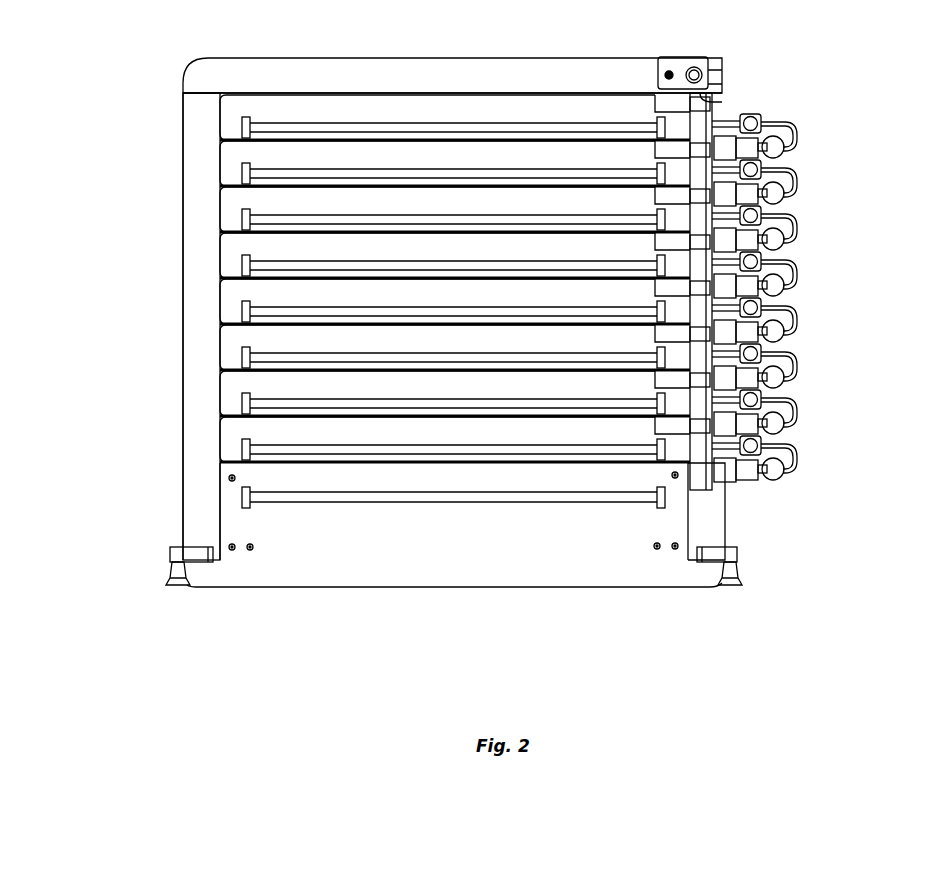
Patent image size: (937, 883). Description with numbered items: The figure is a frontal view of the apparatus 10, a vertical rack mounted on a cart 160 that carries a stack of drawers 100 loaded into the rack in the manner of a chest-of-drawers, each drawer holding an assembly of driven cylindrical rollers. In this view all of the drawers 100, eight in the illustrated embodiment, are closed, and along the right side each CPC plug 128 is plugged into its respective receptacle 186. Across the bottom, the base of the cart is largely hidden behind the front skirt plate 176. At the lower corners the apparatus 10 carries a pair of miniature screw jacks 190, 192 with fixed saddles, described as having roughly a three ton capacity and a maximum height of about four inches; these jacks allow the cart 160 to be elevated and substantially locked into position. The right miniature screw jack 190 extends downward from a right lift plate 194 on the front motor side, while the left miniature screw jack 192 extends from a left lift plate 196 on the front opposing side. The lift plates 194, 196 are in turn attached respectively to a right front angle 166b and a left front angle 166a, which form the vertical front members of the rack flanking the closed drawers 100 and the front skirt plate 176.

The apparatus 10 is at (92, 54).
The stackable drawers 100 is at (233, 107).
The receptacles 186 is at (722, 197).
The CPC plugs 128 is at (748, 193).
The cart 160 is at (752, 502).
The left front angle 166a is at (200, 502).
The right front angle 166b is at (703, 507).
The front skirt plate 176 is at (412, 537).
The left lift plate 196 is at (195, 550).
The left miniature screw jack 192 is at (168, 582).
The right lift plate 194 is at (722, 553).
The right miniature screw jack 190 is at (737, 580).